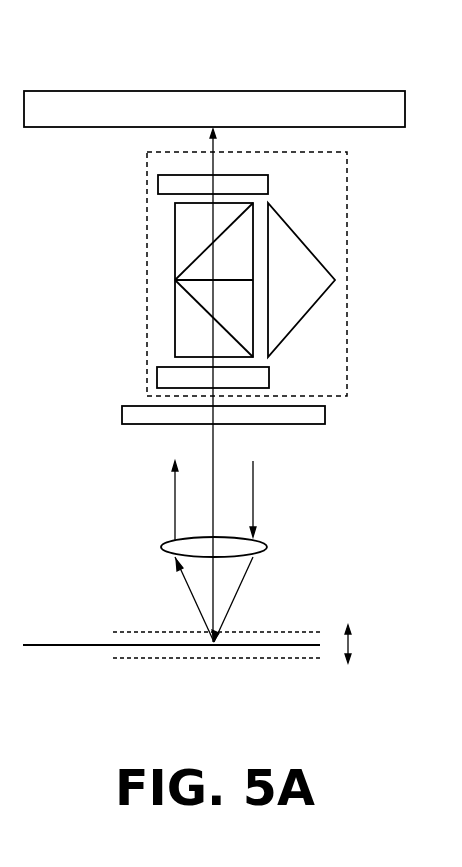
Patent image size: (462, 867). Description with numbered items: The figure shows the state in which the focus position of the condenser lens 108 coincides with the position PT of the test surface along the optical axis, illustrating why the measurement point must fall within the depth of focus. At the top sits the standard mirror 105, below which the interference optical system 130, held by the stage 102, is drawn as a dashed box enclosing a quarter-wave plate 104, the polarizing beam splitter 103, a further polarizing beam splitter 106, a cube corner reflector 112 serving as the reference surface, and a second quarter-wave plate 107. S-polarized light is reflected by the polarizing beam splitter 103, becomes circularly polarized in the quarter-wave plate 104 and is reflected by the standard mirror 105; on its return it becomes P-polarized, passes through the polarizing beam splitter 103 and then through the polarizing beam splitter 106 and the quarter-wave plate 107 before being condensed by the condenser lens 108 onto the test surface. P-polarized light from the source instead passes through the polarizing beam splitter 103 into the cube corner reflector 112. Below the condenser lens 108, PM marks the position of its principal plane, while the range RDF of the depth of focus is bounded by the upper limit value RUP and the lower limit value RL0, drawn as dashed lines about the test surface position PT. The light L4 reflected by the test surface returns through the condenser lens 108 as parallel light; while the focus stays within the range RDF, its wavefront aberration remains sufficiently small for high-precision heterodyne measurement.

The standard mirror 105 is at (347, 99).
The λ/4 plate 104 is at (261, 184).
The polarizing beam splitter 103 is at (230, 252).
The polarizing beam splitter 106 is at (230, 298).
The cube corner reflector 112 is at (293, 298).
The interference optical system 130 is at (147, 342).
The λ/4 plate 107 is at (260, 375).
The stage 102 is at (317, 410).
The light reflected by the test surface L4 is at (175, 509).
The condenser lens 108 is at (259, 543).
The position of the principal plane of the condenser lens PM is at (268, 547).
The upper limit value of the depth of focus RUP is at (267, 631).
The range of the depth of focus RDF is at (379, 645).
The position of the test surface PT is at (250, 645).
The lower limit value of the depth of focus RL0 is at (297, 660).